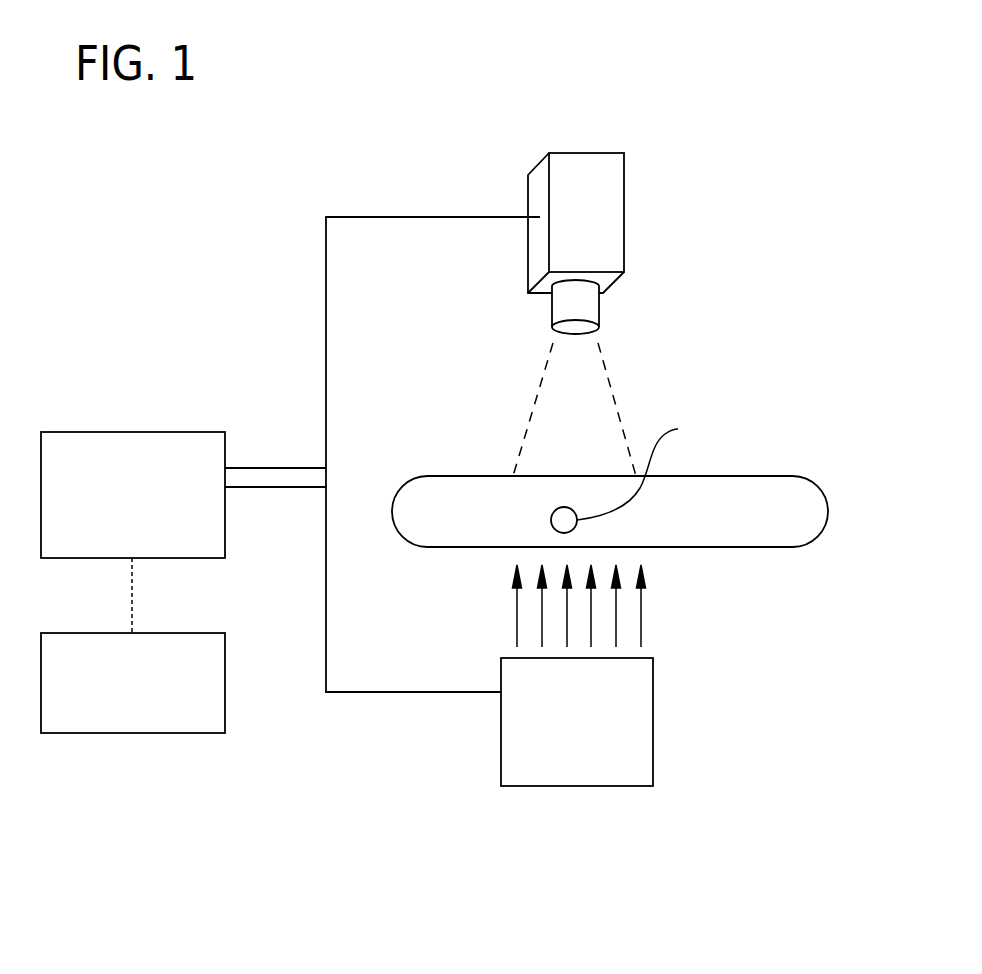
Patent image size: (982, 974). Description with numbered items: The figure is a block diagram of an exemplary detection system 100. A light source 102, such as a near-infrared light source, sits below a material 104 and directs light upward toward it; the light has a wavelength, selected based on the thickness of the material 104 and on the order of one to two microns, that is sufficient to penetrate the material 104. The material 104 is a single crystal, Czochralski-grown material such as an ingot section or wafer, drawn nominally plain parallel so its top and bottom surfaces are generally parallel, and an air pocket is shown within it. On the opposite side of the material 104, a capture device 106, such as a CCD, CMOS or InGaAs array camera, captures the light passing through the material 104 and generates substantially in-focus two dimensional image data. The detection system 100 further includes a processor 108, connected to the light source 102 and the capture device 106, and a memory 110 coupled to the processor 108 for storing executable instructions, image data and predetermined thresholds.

The detection system 100 is at (282, 230).
The light source 102 is at (501, 762).
The material 104 is at (798, 476).
The capture device 106 is at (624, 187).
The processor 108 is at (178, 432).
The memory 110 is at (166, 734).